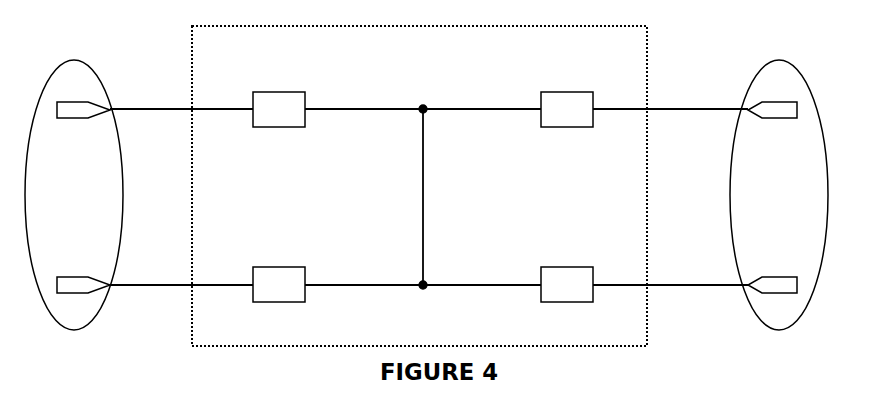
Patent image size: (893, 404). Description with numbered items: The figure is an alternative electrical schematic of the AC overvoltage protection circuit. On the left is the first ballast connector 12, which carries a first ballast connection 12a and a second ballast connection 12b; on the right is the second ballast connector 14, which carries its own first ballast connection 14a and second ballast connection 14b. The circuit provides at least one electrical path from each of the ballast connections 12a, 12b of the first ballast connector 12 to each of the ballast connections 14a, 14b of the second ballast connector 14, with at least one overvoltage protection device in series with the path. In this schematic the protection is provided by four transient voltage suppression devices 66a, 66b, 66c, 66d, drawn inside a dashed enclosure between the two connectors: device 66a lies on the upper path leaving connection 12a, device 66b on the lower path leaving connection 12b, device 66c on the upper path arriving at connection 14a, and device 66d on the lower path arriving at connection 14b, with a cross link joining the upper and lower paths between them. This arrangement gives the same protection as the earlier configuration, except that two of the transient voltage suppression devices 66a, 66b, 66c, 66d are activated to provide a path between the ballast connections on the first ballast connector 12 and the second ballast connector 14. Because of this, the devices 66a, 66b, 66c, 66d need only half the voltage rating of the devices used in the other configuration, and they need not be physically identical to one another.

The first ballast connector 12 is at (82, 62).
The first ballast connection 12a is at (82, 106).
The second ballast connection 12b is at (82, 284).
The second ballast connector 14 is at (768, 64).
The first ballast connection 14a is at (788, 106).
The second ballast connection 14b is at (784, 282).
The transient voltage suppression device 66a is at (277, 101).
The transient voltage suppression device 66b is at (286, 288).
The transient voltage suppression device 66c is at (577, 103).
The transient voltage suppression device 66d is at (580, 293).